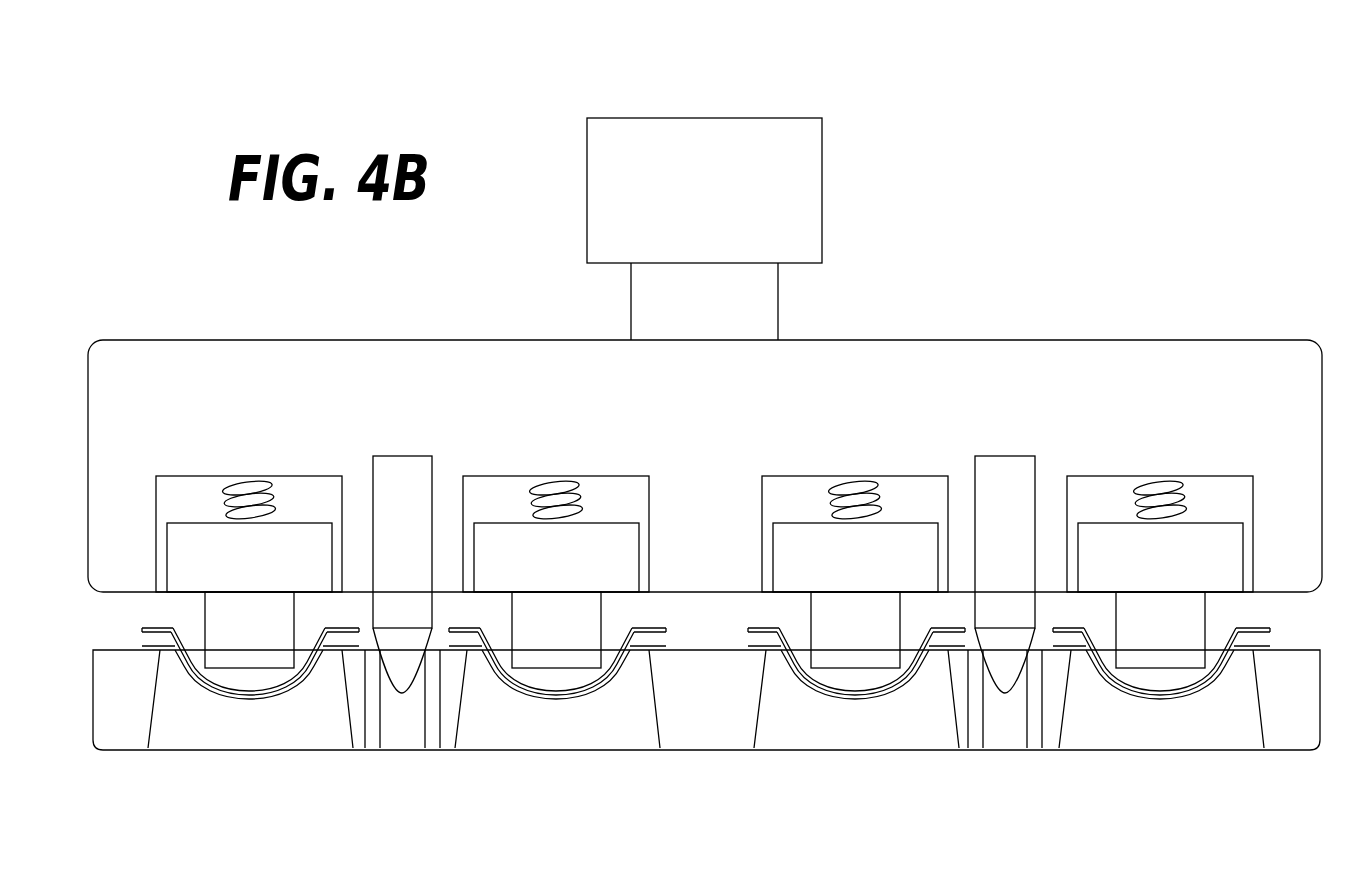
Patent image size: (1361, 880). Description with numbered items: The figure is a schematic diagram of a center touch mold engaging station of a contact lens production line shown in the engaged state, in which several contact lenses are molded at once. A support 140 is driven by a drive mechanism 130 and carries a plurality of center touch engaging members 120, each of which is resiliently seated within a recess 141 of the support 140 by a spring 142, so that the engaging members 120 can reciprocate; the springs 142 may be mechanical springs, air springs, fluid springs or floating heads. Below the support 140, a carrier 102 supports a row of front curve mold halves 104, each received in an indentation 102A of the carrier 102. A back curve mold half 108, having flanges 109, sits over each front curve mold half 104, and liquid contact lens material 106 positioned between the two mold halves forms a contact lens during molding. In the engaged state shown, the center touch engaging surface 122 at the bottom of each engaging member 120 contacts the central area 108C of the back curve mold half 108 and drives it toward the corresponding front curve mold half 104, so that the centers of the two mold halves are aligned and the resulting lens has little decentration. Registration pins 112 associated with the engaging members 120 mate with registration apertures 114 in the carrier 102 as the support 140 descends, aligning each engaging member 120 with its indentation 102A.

The carrier 102 is at (717, 752).
The indentation 102A is at (221, 688).
The front curve mold half 104 is at (292, 689).
The liquid contact lens material 106 is at (243, 695).
The back curve mold half 108 is at (191, 665).
The central area 108C is at (241, 687).
The flanges 109 is at (143, 633).
The registration pin 112 is at (395, 652).
The registration aperture 114 is at (400, 733).
The center touch engaging member 120 is at (205, 622).
The center touch engaging surface 122 is at (265, 692).
The drive mechanism 130 is at (822, 185).
The support 140 is at (1312, 340).
The recess 141 is at (173, 484).
The spring 142 is at (272, 500).